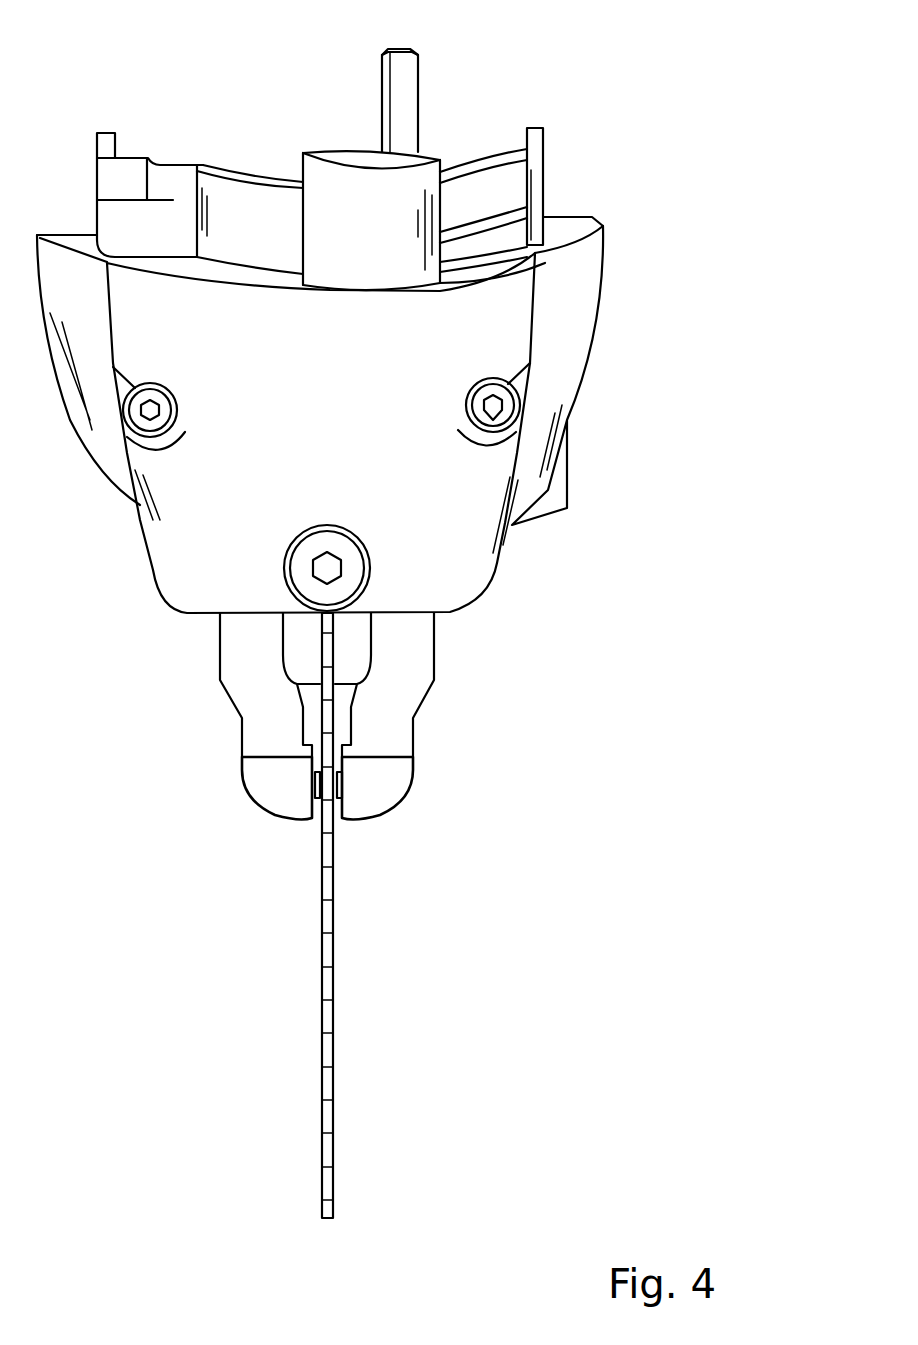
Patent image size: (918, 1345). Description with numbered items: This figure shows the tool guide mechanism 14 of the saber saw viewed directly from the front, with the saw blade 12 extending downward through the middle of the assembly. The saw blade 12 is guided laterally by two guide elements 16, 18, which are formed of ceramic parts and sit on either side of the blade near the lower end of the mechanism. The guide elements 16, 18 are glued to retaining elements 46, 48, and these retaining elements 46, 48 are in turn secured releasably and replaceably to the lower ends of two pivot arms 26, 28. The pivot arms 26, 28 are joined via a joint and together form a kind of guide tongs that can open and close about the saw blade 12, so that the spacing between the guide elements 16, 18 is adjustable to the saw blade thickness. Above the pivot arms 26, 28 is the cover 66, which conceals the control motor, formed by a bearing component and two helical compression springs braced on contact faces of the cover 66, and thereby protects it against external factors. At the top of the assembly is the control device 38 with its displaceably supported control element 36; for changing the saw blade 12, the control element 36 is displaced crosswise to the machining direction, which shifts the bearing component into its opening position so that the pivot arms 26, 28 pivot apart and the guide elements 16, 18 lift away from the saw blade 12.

The saw blade 12 is at (336, 1050).
The tool guide mechanism 14 is at (340, 770).
The guide element 16 is at (315, 793).
The guide element 18 is at (343, 793).
The pivot arm 26 is at (258, 697).
The pivot arm 28 is at (400, 675).
The control element 36 is at (400, 200).
The control device 38 is at (310, 138).
The retaining element 46 is at (278, 781).
The retaining element 48 is at (375, 778).
The cover 66 is at (445, 560).